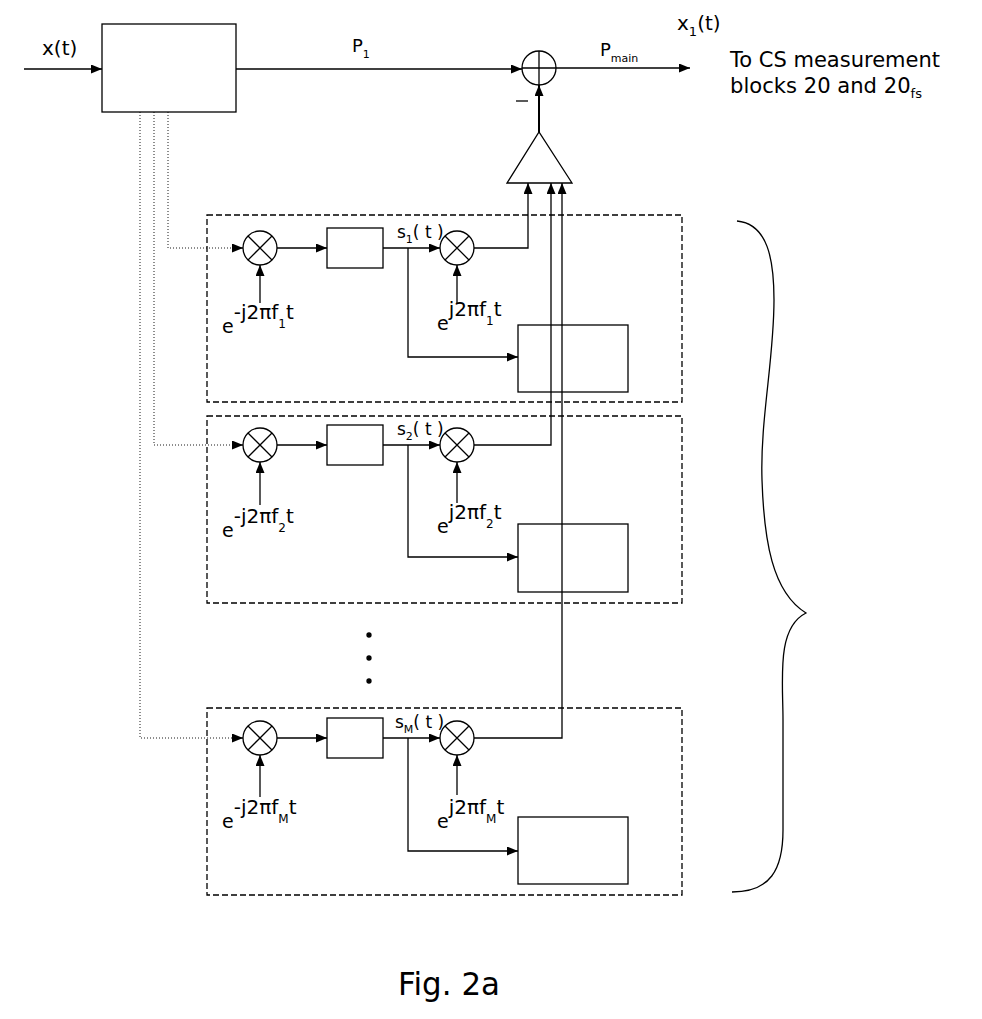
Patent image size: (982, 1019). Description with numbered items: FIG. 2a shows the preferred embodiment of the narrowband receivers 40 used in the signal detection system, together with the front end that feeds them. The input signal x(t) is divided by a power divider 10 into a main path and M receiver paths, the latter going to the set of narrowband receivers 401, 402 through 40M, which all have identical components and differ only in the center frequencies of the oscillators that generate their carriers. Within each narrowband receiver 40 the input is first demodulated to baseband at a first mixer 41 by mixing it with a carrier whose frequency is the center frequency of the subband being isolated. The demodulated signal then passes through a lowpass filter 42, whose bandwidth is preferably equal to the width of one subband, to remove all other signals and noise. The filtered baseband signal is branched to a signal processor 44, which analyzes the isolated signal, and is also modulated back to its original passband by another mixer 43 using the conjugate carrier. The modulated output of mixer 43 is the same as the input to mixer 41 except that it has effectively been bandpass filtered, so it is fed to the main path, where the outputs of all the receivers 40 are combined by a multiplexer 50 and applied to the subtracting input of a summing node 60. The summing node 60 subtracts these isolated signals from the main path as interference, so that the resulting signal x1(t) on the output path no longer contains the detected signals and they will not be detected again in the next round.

The power divider 10 is at (169, 68).
The summing node 60 is at (544, 66).
The multiplexer 50 is at (553, 134).
The narrowband receiver 40 is at (788, 556).
The first narrowband receiver 401 is at (661, 309).
The second narrowband receiver 402 is at (668, 504).
The M-th narrowband receiver 40M is at (668, 801).
The first mixer 41 is at (252, 504).
The lowpass filter 42 is at (355, 493).
The mixer 43 is at (471, 501).
The signal processor 44 is at (573, 604).